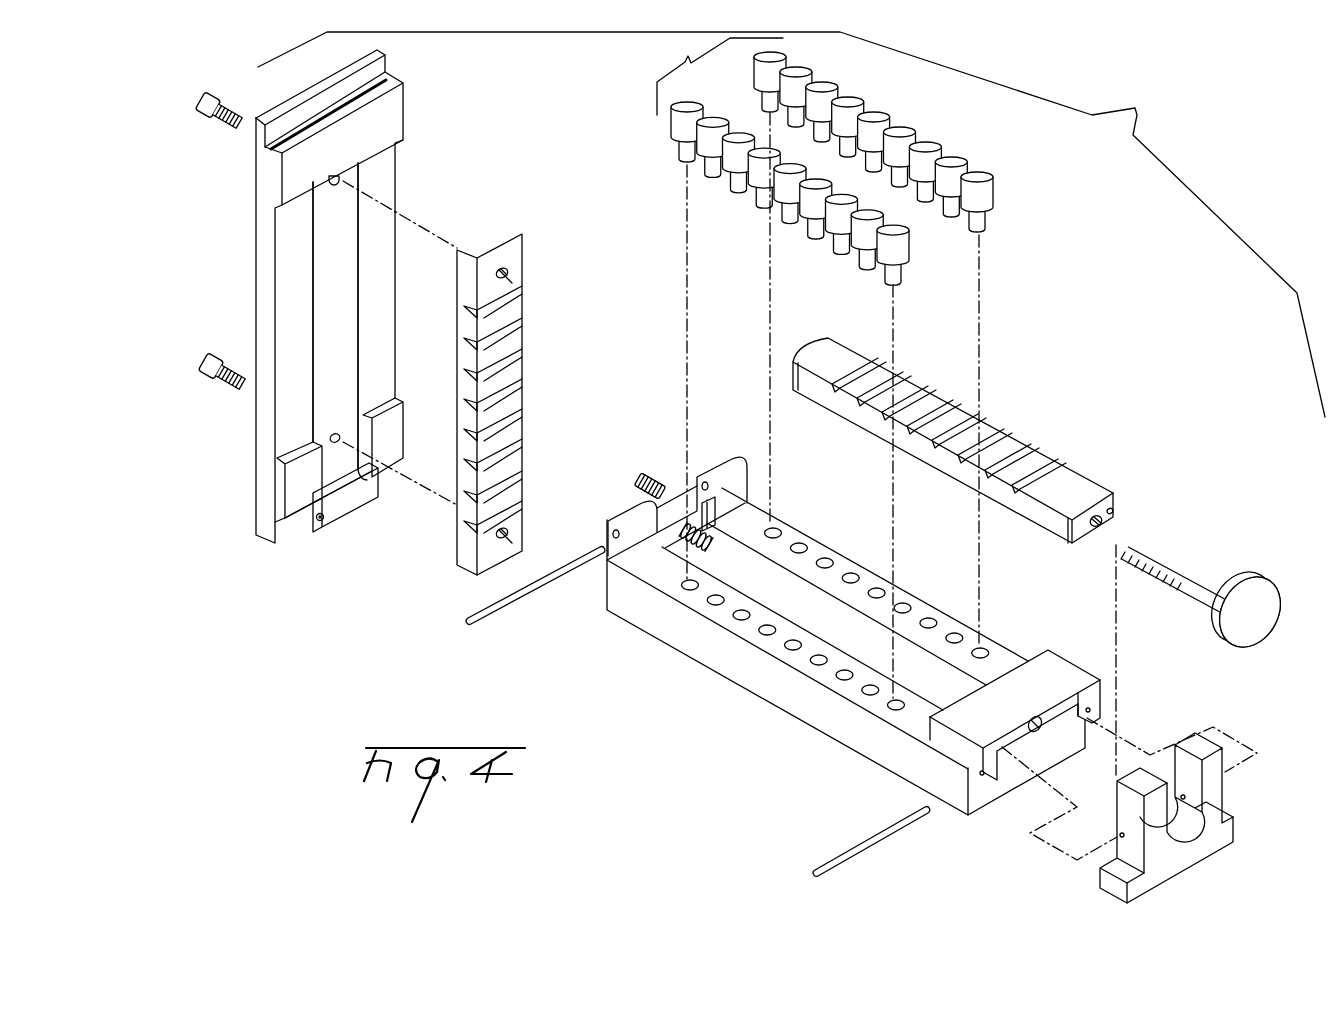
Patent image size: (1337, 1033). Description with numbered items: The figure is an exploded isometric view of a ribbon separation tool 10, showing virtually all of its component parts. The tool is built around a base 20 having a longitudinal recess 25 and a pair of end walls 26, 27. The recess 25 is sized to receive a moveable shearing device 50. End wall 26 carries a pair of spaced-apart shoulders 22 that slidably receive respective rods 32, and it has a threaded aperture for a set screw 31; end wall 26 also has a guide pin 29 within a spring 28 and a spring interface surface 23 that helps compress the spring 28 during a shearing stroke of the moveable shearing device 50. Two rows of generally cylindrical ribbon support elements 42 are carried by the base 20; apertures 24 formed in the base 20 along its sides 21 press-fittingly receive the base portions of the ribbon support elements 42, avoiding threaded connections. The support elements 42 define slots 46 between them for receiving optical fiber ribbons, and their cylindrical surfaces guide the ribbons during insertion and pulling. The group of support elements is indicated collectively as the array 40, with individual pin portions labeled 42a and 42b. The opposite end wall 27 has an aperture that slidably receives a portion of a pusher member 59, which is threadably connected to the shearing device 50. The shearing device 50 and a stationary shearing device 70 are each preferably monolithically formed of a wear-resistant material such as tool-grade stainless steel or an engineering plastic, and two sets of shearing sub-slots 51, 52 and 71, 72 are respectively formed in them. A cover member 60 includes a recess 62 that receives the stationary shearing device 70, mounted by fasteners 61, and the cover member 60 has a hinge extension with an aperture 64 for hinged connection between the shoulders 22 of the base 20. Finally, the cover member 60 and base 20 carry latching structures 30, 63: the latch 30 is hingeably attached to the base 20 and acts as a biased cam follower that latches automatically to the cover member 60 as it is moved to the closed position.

The ribbon separation tool 10 is at (791, 224).
The base 20 is at (783, 616).
The sides 21 is at (685, 627).
The shoulders 22 is at (612, 512).
The spring interface surface 23 is at (653, 570).
The apertures 24 is at (982, 652).
The longitudinal recess 25 is at (823, 613).
The end wall 26 is at (737, 458).
The end wall 27 is at (1057, 667).
The spring 28 is at (693, 512).
The guide pin 29 is at (697, 540).
The latching structure 30 is at (1213, 765).
The set screw 31 is at (649, 470).
The rods 32 is at (507, 603).
The pin array 40 is at (885, 367).
The ribbon support elements 42 is at (1026, 200).
The pin shank 42a is at (982, 227).
The pin head body 42b is at (987, 197).
The slots 46 is at (977, 162).
The moveable shearing device 50 is at (978, 437).
The shearing sub-slots 51 is at (980, 410).
The shearing sub-slots 52 is at (880, 353).
The pusher member 59 is at (1262, 600).
The cover member 60 is at (392, 50).
The fasteners 61 is at (203, 90).
The recess 62 is at (348, 303).
The latching structure 63 is at (410, 70).
The aperture 64 is at (315, 523).
The stationary shearing device 70 is at (523, 374).
The shearing sub-slots 71 is at (537, 288).
The shearing sub-slots 72 is at (537, 408).